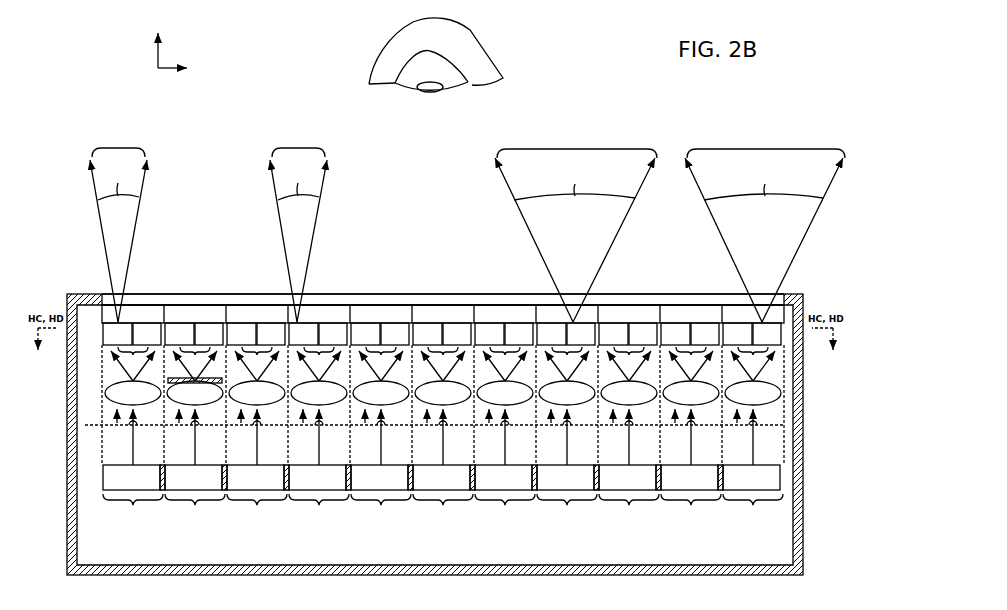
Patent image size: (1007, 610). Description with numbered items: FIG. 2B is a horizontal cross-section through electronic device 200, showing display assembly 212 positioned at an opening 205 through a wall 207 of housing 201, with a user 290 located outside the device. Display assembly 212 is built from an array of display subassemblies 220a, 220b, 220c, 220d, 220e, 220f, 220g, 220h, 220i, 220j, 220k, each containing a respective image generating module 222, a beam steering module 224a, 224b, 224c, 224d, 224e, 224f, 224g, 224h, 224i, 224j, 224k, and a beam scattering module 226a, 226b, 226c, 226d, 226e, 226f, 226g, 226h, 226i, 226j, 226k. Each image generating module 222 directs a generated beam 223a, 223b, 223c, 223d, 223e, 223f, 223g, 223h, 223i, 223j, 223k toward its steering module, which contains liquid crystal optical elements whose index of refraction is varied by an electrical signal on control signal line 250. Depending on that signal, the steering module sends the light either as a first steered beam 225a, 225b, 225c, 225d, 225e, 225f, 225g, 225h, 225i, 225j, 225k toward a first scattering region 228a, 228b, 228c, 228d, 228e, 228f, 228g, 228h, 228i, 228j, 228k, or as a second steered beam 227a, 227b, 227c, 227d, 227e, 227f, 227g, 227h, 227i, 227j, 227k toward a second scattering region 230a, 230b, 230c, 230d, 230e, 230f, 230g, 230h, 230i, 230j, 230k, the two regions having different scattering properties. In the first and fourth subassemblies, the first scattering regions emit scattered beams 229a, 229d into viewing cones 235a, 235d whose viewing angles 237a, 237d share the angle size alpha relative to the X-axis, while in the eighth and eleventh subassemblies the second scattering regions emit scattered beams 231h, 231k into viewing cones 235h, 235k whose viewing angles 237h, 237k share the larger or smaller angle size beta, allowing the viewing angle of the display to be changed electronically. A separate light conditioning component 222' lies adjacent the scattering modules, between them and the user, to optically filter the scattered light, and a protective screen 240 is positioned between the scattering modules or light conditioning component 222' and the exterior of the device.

The electronic device 200 is at (142, 46).
The housing 201 is at (64, 302).
The opening 205 is at (103, 300).
The wall 207 is at (80, 294).
The display assembly 212 is at (413, 519).
The screen 240 is at (423, 291).
The control signal line 250 is at (95, 428).
The user 290 is at (472, 52).
The image generating module 222 is at (441, 477).
The light conditioning component 222' is at (443, 344).
The display subassembly 220a is at (133, 509).
The display subassembly 220b is at (195, 509).
The display subassembly 220c is at (257, 509).
The display subassembly 220d is at (319, 509).
The display subassembly 220e is at (381, 509).
The display subassembly 220f is at (443, 509).
The display subassembly 220g is at (505, 509).
The display subassembly 220h is at (567, 509).
The display subassembly 220i is at (629, 509).
The display subassembly 220j is at (691, 509).
The display subassembly 220k is at (753, 509).
The generated beam 223a is at (121, 437).
The generated beam 223b is at (183, 437).
The generated beam 223c is at (245, 437).
The generated beam 223d is at (307, 437).
The generated beam 223e is at (369, 437).
The generated beam 223f is at (432, 437).
The generated beam 223g is at (493, 437).
The generated beam 223h is at (555, 437).
The generated beam 223i is at (618, 437).
The generated beam 223j is at (680, 437).
The generated beam 223k is at (741, 437).
The beam steering module 224a is at (133, 393).
The beam steering module 224b is at (195, 393).
The beam steering module 224c is at (257, 393).
The beam steering module 224d is at (319, 393).
The beam steering module 224e is at (381, 393).
The beam steering module 224f is at (443, 393).
The beam steering module 224g is at (505, 393).
The beam steering module 224h is at (567, 393).
The beam steering module 224i is at (629, 393).
The beam steering module 224j is at (691, 393).
The beam steering module 224k is at (753, 393).
The first steered beam 225a is at (115, 366).
The first steered beam 225b is at (177, 366).
The first steered beam 225c is at (239, 366).
The first steered beam 225d is at (301, 366).
The first steered beam 225e is at (363, 366).
The first steered beam 225f is at (426, 366).
The first steered beam 225g is at (487, 366).
The first steered beam 225h is at (549, 366).
The first steered beam 225i is at (612, 366).
The first steered beam 225j is at (674, 366).
The first steered beam 225k is at (735, 366).
The beam scattering module 226a is at (133, 356).
The beam scattering module 226b is at (195, 356).
The beam scattering module 226c is at (257, 356).
The beam scattering module 226d is at (319, 356).
The beam scattering module 226e is at (381, 356).
The beam scattering module 226f is at (443, 356).
The beam scattering module 226g is at (505, 356).
The beam scattering module 226h is at (567, 356).
The beam scattering module 226i is at (629, 356).
The beam scattering module 226j is at (691, 356).
The beam scattering module 226k is at (753, 356).
The second steered beam 227a is at (150, 366).
The second steered beam 227b is at (212, 366).
The second steered beam 227c is at (274, 366).
The second steered beam 227d is at (336, 366).
The second steered beam 227e is at (398, 366).
The second steered beam 227f is at (460, 366).
The second steered beam 227g is at (522, 366).
The second steered beam 227h is at (584, 366).
The second steered beam 227i is at (646, 366).
The second steered beam 227j is at (708, 366).
The second steered beam 227k is at (770, 366).
The first scattering region 228a is at (117, 334).
The first scattering region 228b is at (179, 334).
The first scattering region 228c is at (241, 334).
The first scattering region 228d is at (303, 334).
The first scattering region 228e is at (365, 334).
The first scattering region 228f is at (427, 334).
The first scattering region 228g is at (489, 334).
The first scattering region 228h is at (551, 334).
The first scattering region 228i is at (613, 334).
The first scattering region 228j is at (675, 334).
The first scattering region 228k is at (737, 334).
The second scattering region 230a is at (147, 334).
The second scattering region 230b is at (209, 334).
The second scattering region 230c is at (271, 334).
The second scattering region 230d is at (333, 334).
The second scattering region 230e is at (395, 334).
The second scattering region 230f is at (457, 334).
The second scattering region 230g is at (519, 334).
The second scattering region 230h is at (581, 334).
The second scattering region 230i is at (643, 334).
The second scattering region 230j is at (705, 334).
The second scattering region 230k is at (767, 334).
The scattered beam 229a is at (89, 171).
The scattered beam 229d is at (269, 171).
The scattered beam 231h is at (503, 186).
The scattered beam 231k is at (697, 192).
The viewing cone 235a is at (118, 147).
The viewing cone 235d is at (298, 147).
The viewing cone 235h is at (573, 147).
The viewing cone 235k is at (762, 147).
The viewing angle 237a is at (122, 198).
The viewing angle 237d is at (302, 198).
The viewing angle 237h is at (578, 199).
The viewing angle 237k is at (770, 199).